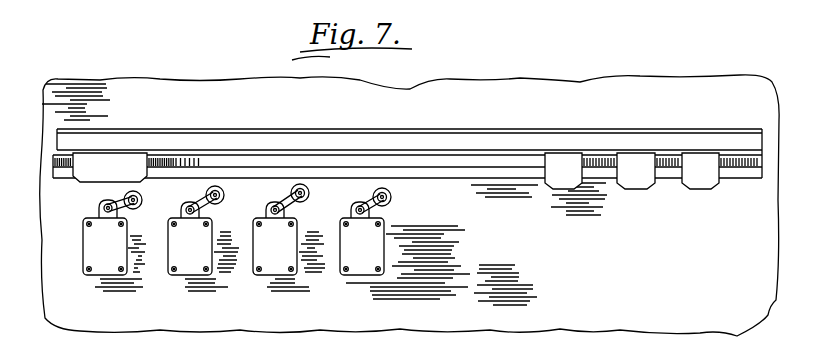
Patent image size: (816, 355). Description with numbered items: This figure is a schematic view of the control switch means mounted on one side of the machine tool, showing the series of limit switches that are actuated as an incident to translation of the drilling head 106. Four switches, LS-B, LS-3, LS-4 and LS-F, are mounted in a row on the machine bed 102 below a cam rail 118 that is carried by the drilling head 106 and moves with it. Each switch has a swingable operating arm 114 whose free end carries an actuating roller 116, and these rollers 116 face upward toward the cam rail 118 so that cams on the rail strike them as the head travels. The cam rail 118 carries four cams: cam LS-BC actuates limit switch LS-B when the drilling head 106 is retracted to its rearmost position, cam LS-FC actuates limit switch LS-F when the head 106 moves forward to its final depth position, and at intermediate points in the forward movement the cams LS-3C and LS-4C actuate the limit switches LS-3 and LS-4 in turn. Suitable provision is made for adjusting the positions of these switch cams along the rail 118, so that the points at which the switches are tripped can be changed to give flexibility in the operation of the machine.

The drilling head 106 is at (405, 102).
The cam rail 118 is at (290, 163).
The machine bed 102 is at (574, 264).
The swingable operating arm 114 is at (253, 253).
The actuating roller 116 is at (124, 197).
The cam LS-BC is at (113, 167).
The cam LS-3C is at (582, 117).
The cam LS-4C is at (681, 117).
The cam LS-FC is at (697, 163).
The limit switch LS-B is at (115, 267).
The limit switch LS-F is at (195, 275).
The limit switch LS-4 is at (281, 272).
The limit switch LS-3 is at (362, 270).